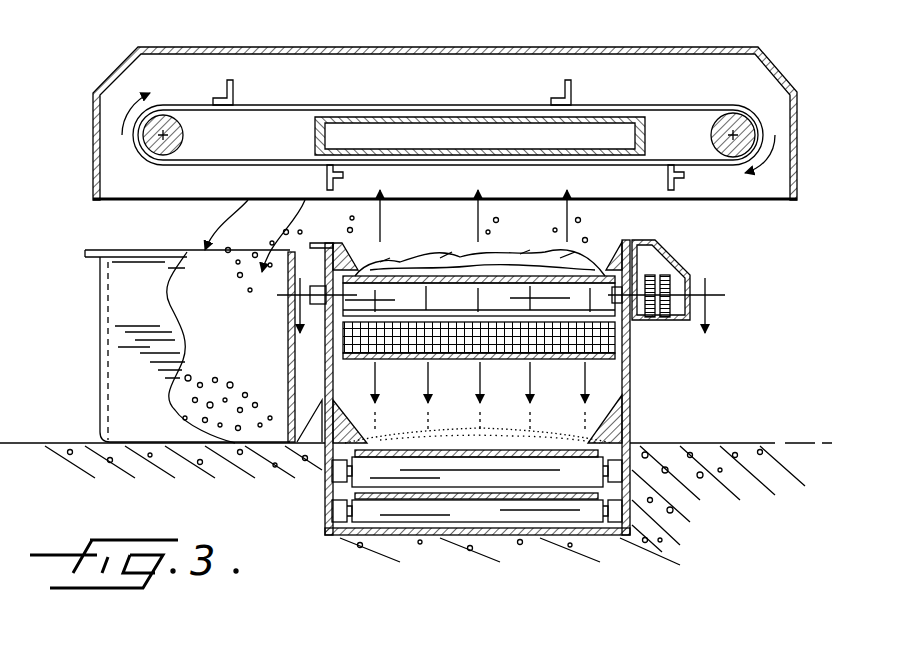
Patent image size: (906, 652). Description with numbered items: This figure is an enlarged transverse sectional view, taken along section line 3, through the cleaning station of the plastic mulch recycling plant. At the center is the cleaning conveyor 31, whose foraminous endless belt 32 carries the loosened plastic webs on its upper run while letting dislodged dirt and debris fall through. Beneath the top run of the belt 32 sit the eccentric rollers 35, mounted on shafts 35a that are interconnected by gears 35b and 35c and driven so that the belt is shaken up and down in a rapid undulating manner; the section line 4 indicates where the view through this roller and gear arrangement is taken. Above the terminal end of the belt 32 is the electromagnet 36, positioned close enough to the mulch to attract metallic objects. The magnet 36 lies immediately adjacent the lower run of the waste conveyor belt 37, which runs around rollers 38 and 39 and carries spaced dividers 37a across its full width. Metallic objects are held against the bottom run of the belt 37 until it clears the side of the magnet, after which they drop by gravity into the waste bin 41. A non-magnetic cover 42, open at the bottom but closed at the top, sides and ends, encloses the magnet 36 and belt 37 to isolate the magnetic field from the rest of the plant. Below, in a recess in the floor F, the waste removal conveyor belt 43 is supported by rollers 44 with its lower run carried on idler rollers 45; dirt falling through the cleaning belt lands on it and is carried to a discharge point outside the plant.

The non-magnetic cover 42 is at (262, 47).
The roller 39 is at (176, 112).
The roller 38 is at (752, 112).
The waste conveyor belt 37 is at (282, 110).
The dividers 37a is at (236, 94).
The electromagnet 36 is at (453, 117).
The section line 3 is at (473, 216).
The endless belt 32 is at (450, 276).
The cleaning conveyor 31 is at (588, 325).
The eccentric rollers 35 is at (462, 305).
The shafts 35a is at (686, 292).
The gear 35b is at (650, 273).
The gear 35c is at (668, 323).
The section line 4 is at (497, 307).
The waste bin 41 is at (120, 318).
The waste removal conveyor belt 43 is at (498, 446).
The rollers 44 is at (433, 473).
The idler rollers 45 is at (527, 518).
The floor F is at (688, 443).